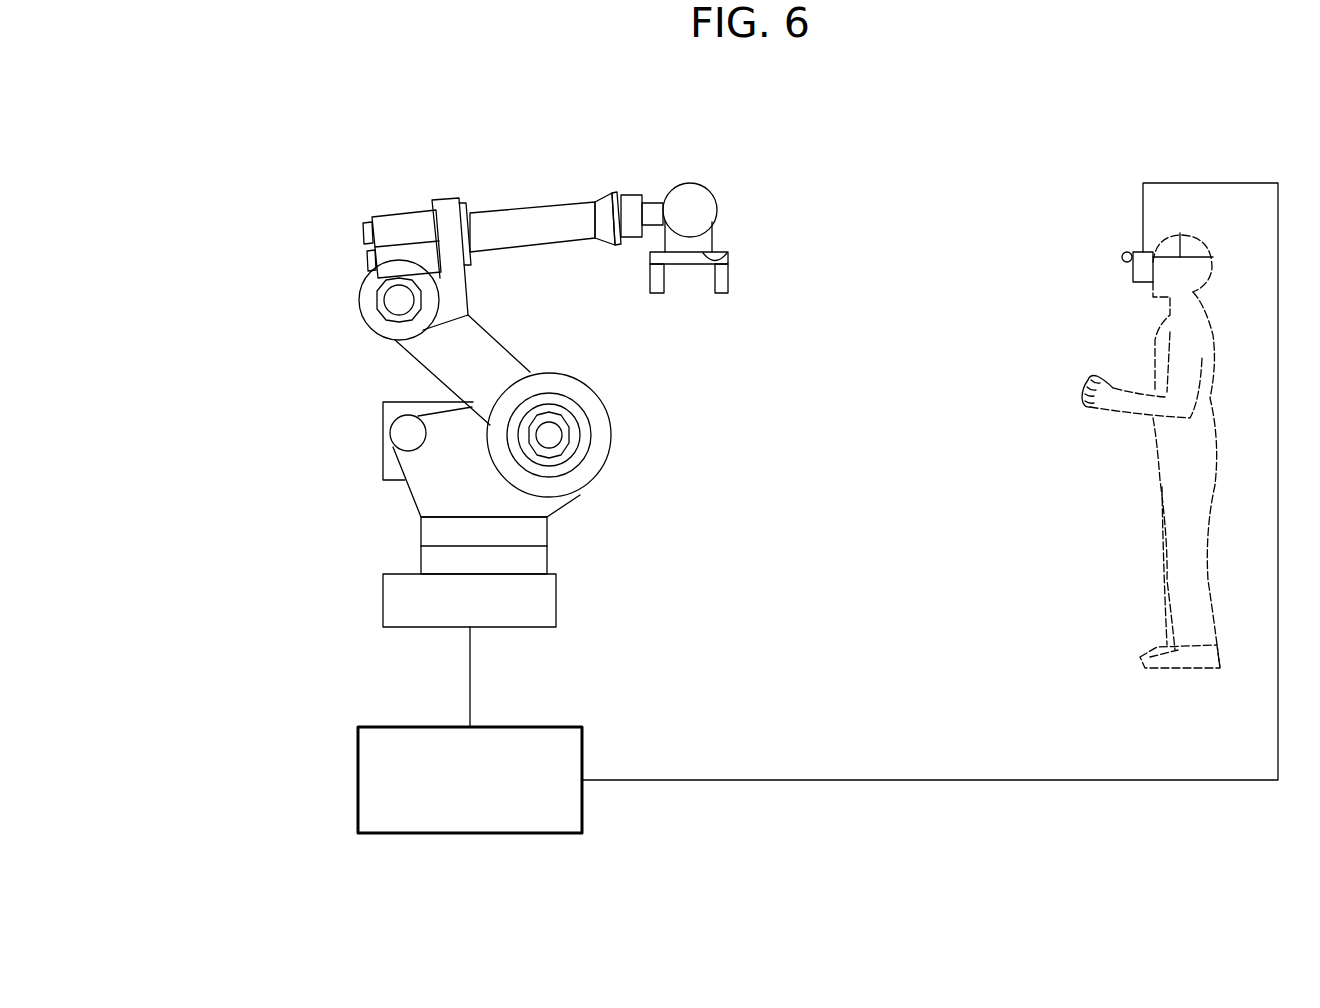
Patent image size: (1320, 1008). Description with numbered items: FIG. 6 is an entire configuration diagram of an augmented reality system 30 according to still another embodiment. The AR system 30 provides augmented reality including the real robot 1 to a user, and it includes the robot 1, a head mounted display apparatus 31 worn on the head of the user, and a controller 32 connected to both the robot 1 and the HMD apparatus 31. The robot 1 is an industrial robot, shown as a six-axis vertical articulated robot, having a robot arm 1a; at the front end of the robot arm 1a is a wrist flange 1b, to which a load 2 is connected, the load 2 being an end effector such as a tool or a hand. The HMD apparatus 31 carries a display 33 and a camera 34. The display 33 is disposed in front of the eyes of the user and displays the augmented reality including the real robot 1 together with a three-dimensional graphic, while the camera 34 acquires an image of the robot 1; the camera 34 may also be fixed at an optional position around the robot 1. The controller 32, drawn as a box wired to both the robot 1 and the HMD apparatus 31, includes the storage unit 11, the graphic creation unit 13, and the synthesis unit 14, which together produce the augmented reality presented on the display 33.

The robot 1 is at (326, 163).
The robot arm 1a is at (530, 205).
The wrist flange 1b is at (728, 253).
The load 2 is at (730, 272).
The augmented reality system 30 is at (992, 108).
The head mounted display apparatus 31 is at (1137, 250).
The display 33 is at (1173, 257).
The camera 34 is at (1122, 257).
The controller 32 is at (470, 834).
The storage unit 11 is at (470, 780).
The graphic creation unit 13 is at (470, 780).
The synthesis unit 14 is at (470, 780).